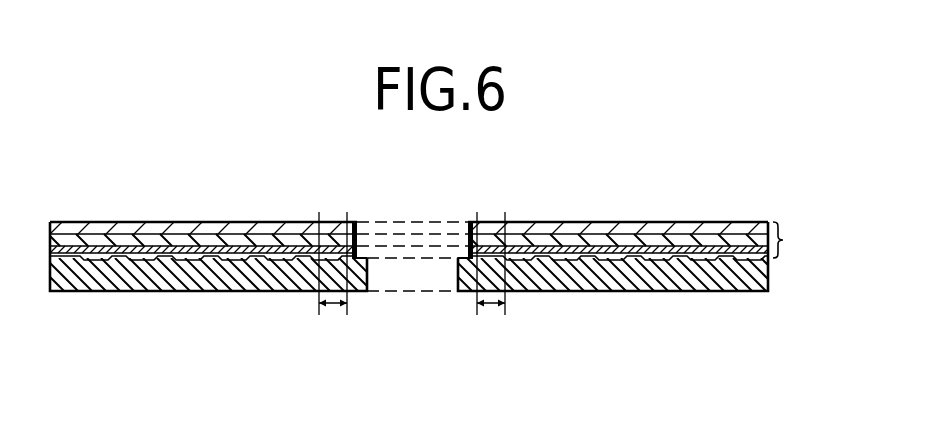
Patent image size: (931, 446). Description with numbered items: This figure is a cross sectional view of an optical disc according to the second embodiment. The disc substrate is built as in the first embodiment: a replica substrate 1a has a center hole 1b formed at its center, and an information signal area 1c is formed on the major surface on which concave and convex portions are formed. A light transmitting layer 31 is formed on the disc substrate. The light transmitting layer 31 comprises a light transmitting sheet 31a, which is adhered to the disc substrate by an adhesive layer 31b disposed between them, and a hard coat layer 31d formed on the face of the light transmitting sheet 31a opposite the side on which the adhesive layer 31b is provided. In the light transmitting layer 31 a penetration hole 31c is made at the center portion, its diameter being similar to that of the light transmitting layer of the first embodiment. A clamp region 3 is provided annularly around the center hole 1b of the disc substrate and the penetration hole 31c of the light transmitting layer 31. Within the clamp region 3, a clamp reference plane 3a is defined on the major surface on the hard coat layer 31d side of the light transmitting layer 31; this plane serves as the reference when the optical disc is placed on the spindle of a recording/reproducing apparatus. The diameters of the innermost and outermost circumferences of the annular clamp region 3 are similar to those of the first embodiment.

The light transmitting layer 31 is at (785, 240).
The light transmitting sheet 31a is at (138, 240).
The adhesive layer 31b is at (722, 256).
The penetration hole 31c is at (360, 242).
The hard coat layer 31d is at (101, 222).
The replica substrate 1a is at (545, 268).
The center hole 1b is at (457, 280).
The information signal area 1c is at (631, 260).
The clamp region 3 is at (333, 308).
The clamp reference plane 3a is at (333, 222).